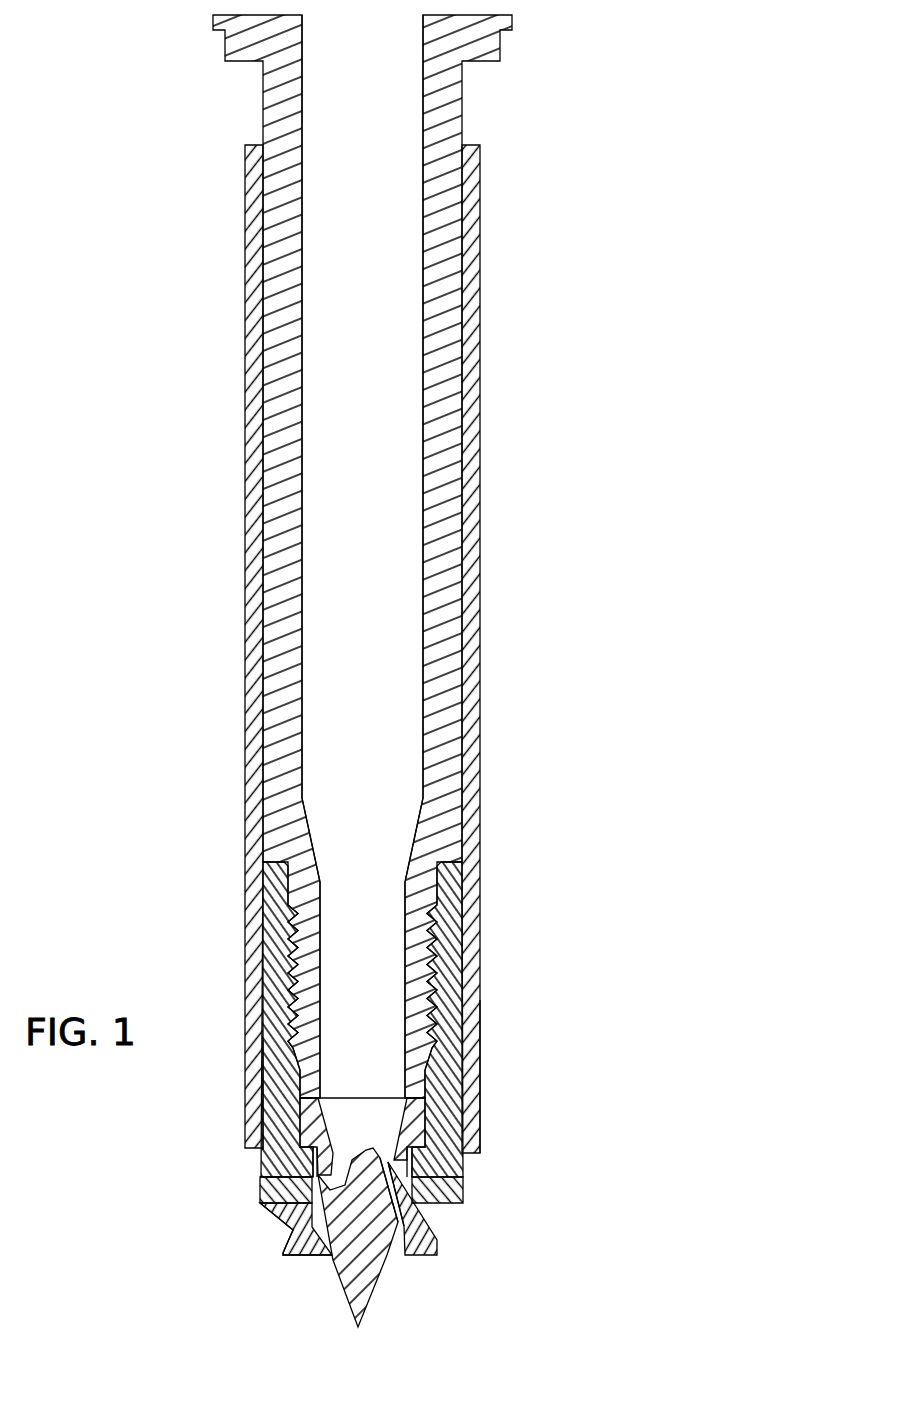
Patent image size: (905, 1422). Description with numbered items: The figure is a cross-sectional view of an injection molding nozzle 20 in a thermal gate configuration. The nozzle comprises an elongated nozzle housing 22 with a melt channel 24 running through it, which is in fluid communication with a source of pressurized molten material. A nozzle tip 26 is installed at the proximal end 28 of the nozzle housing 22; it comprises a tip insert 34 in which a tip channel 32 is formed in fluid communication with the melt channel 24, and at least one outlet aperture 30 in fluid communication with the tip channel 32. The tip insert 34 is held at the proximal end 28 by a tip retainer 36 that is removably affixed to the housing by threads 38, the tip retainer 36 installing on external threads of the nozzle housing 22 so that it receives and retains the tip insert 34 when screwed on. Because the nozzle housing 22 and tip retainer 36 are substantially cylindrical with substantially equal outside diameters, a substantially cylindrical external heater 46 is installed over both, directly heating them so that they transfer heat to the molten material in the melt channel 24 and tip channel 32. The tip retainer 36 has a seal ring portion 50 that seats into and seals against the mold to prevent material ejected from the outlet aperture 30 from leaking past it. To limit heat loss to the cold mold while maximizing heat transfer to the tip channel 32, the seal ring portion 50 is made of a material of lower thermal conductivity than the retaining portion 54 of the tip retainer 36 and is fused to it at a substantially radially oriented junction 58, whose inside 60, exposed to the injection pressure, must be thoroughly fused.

The injection molding nozzle 20 is at (180, 692).
The nozzle housing 22 is at (463, 110).
The melt channel 24 is at (382, 682).
The nozzle tip 26 is at (238, 1219).
The proximal end 28 is at (520, 1104).
The outlet aperture 30 is at (396, 1222).
The tip channel 32 is at (380, 1132).
The tip insert 34 is at (340, 1283).
The tip retainer 36 is at (262, 1173).
The threads 38 is at (435, 987).
The external heater 46 is at (480, 695).
The seal ring portion 50 is at (283, 1245).
The retaining portion 54 is at (262, 1087).
The junction 58 is at (450, 1193).
The inside of junction 60 is at (427, 1168).